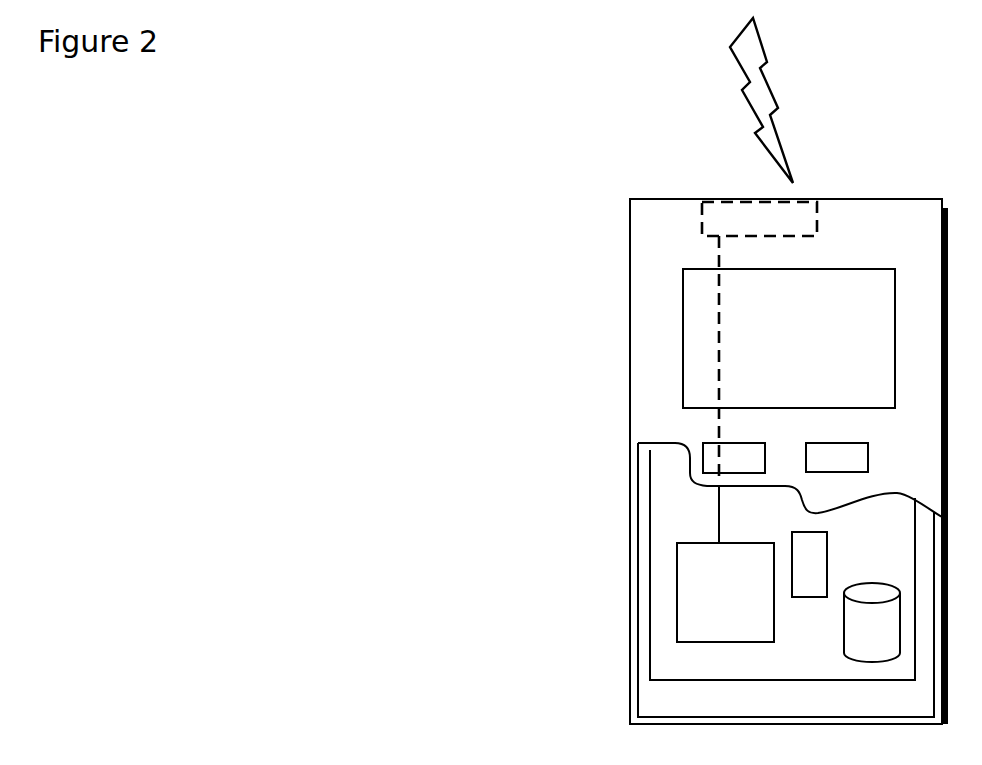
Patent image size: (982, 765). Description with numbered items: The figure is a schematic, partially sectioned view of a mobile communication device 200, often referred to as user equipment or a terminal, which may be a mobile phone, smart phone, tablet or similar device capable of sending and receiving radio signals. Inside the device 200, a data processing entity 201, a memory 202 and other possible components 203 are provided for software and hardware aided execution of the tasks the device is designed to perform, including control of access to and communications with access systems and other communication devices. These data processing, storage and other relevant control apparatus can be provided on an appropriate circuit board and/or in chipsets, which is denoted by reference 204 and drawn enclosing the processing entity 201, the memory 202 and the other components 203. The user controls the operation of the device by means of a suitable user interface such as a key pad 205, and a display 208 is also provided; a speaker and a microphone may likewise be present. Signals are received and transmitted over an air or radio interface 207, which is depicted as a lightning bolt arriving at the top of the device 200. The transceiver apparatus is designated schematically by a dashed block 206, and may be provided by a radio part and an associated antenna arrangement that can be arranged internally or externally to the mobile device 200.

The communication device 200 is at (630, 243).
The data processing entity 201 is at (682, 575).
The memory 202 is at (865, 635).
The other possible components 203 is at (808, 548).
The circuit board 204 is at (677, 663).
The key pad 205 is at (708, 458).
The transceiver apparatus 206 is at (807, 213).
The radio interface 207 is at (792, 128).
The display 208 is at (700, 325).